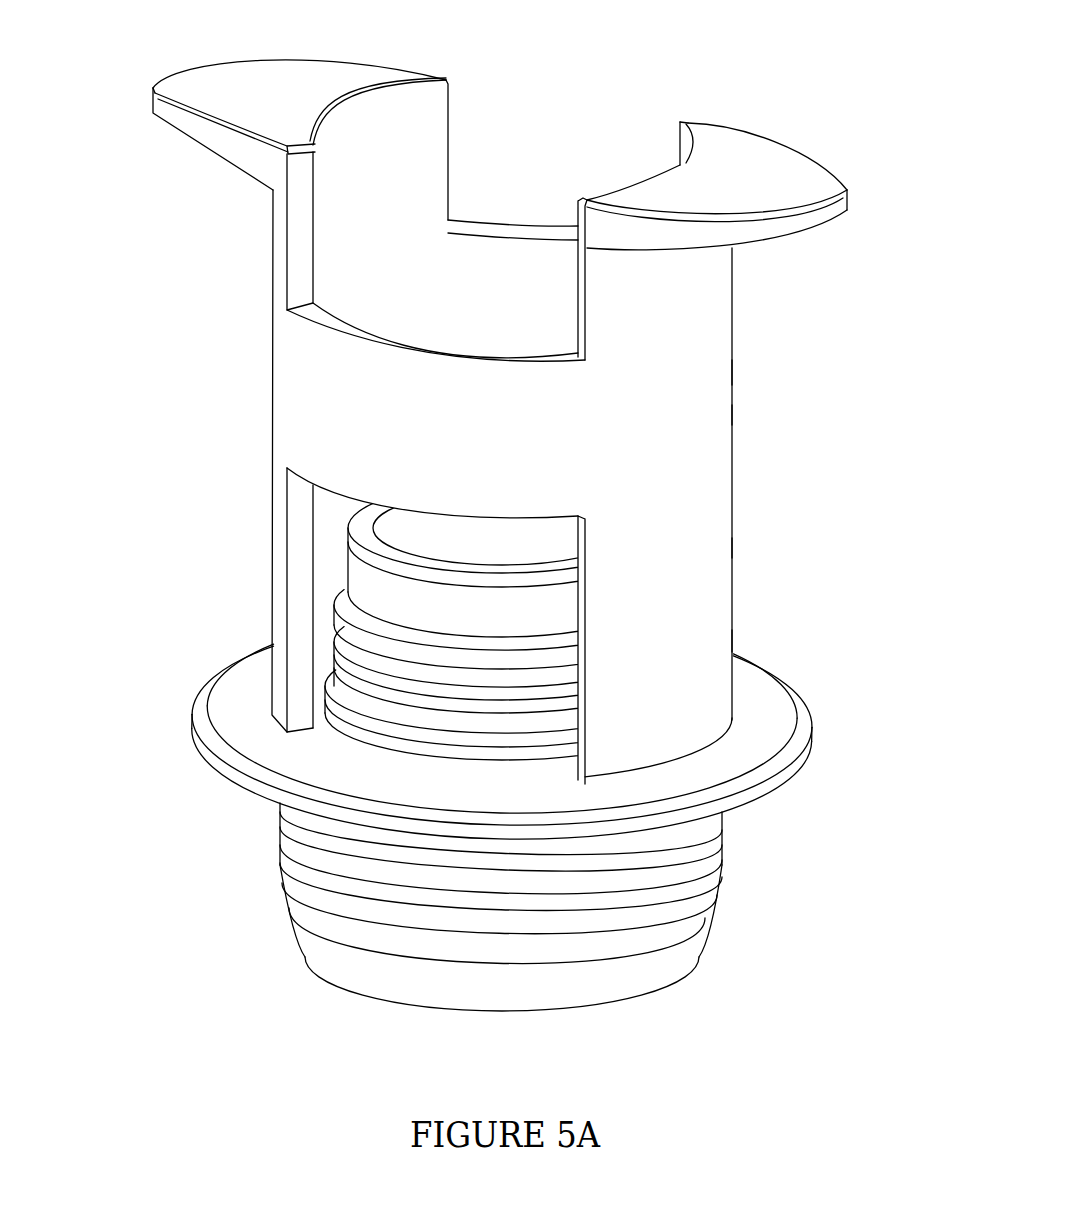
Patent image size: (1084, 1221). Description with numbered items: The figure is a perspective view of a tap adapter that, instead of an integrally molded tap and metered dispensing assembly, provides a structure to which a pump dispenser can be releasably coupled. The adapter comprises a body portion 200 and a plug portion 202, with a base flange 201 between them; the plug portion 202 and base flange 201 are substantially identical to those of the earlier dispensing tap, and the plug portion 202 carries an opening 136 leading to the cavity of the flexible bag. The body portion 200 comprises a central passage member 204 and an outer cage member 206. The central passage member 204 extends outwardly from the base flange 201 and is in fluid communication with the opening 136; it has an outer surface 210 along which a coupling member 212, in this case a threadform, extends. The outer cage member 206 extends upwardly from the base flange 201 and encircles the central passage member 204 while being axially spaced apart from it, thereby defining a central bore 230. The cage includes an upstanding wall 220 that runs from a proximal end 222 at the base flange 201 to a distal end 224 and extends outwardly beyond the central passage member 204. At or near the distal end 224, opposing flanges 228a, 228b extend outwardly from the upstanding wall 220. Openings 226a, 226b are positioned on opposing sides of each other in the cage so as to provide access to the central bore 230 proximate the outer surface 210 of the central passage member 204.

The opening 136 is at (501, 1014).
The body portion 200 is at (719, 478).
The base flange 201 is at (801, 704).
The plug portion 202 is at (723, 860).
The central passage member 204 is at (346, 597).
The outer cage member 206 is at (719, 372).
The outer surface 210 is at (360, 548).
The coupling member 212 is at (342, 635).
The upstanding wall 220 is at (719, 415).
The proximal end 222 is at (731, 640).
The distal end 224 is at (833, 229).
The opening 226a is at (425, 720).
The opening 226b is at (731, 548).
The flange 228a is at (172, 80).
The flange 228b is at (798, 160).
The central bore 230 is at (632, 72).